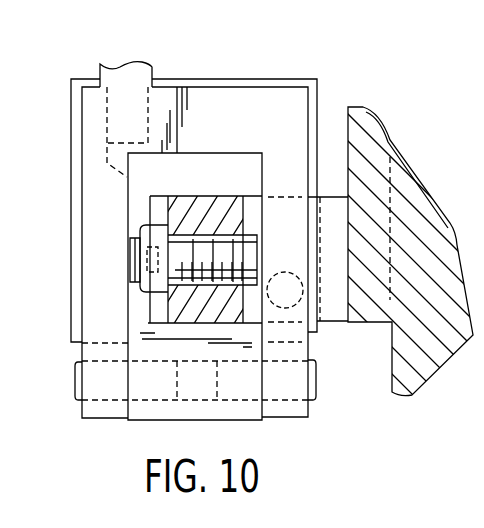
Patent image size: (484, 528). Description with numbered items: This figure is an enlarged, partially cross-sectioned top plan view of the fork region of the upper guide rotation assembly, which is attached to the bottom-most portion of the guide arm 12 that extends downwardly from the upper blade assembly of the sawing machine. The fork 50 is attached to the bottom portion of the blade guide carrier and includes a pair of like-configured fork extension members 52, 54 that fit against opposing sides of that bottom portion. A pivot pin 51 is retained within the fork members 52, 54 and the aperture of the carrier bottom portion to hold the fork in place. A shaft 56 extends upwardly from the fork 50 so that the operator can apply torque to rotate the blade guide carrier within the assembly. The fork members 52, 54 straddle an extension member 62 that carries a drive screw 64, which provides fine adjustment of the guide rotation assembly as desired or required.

The guide arm 12 is at (413, 203).
The fork 50 is at (310, 100).
The pivot pin 51 is at (76, 378).
The fork extension member 52 is at (293, 252).
The fork extension member 54 is at (97, 275).
The shaft 56 is at (148, 73).
The extension member 62 is at (198, 196).
The drive screw 64 is at (128, 262).